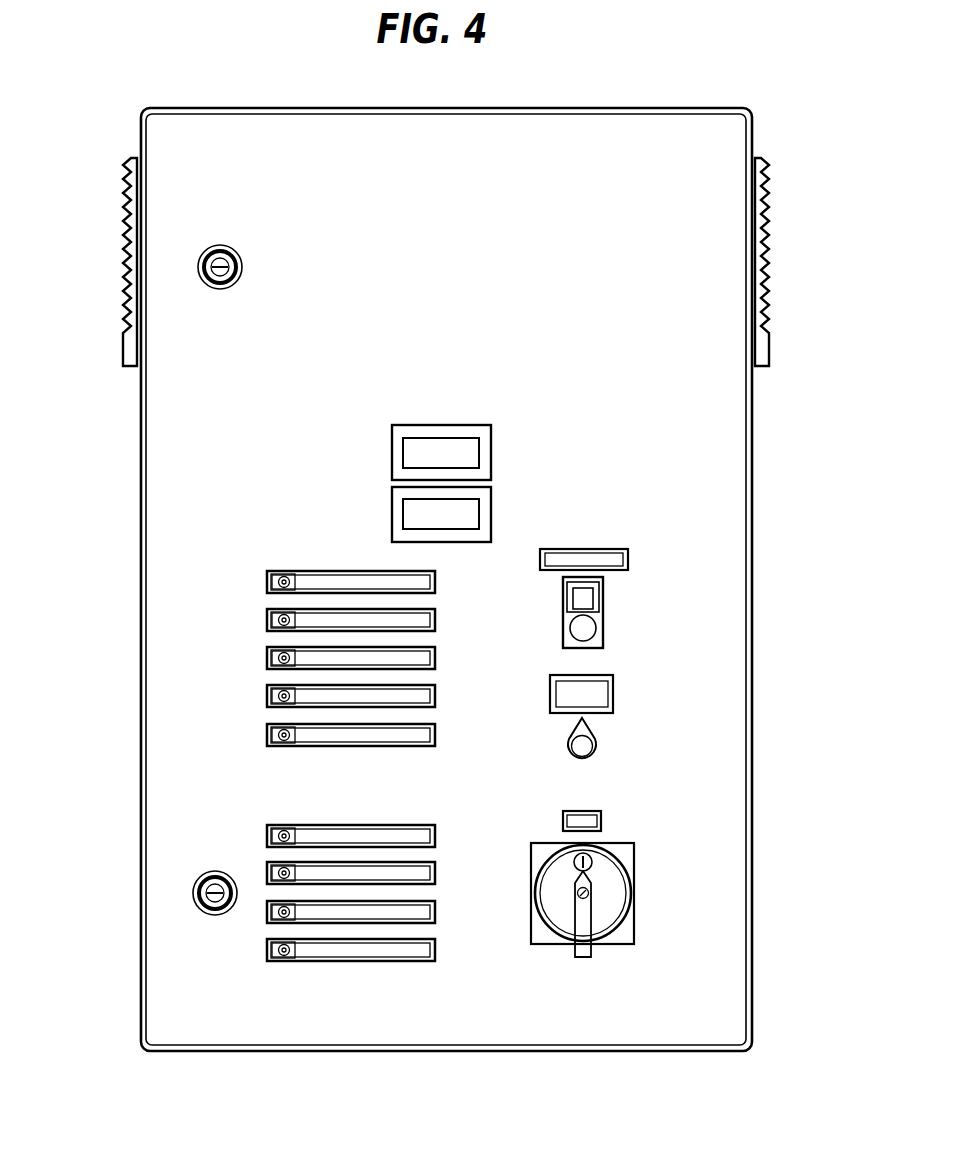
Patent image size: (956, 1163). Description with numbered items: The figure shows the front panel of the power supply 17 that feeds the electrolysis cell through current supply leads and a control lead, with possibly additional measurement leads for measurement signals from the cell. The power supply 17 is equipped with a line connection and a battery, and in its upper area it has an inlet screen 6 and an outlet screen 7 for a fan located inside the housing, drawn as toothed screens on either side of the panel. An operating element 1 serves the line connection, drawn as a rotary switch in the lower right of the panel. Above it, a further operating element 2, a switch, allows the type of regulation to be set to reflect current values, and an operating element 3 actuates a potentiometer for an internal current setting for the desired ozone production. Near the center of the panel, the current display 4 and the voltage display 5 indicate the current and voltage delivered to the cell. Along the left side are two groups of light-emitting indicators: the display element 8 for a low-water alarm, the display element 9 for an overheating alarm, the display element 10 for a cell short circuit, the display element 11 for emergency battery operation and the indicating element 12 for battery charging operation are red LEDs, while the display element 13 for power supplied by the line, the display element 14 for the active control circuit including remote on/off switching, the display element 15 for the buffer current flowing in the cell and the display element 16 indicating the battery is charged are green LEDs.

The operating element 1 is at (616, 898).
The operating element 2 is at (586, 745).
The operating element for a potentiometer 3 is at (586, 603).
The current display 4 is at (491, 490).
The voltage display 5 is at (491, 428).
The inlet screen 6 is at (763, 268).
The outlet screen 7 is at (127, 267).
The display element for a low-water alarm 8 is at (267, 580).
The display element for an overheating alarm 9 is at (267, 618).
The display element for a cell short circuit 10 is at (267, 656).
The display element for emergency battery operation 11 is at (267, 694).
The indicating element for battery charging operation 12 is at (267, 733).
The display element for the power supplied by the line 13 is at (267, 834).
The display element for the active control circuit 14 is at (267, 871).
The display element for the buffer current 15 is at (267, 910).
The display element indicating the battery is charged 16 is at (267, 948).
The power supply 17 is at (275, 1052).